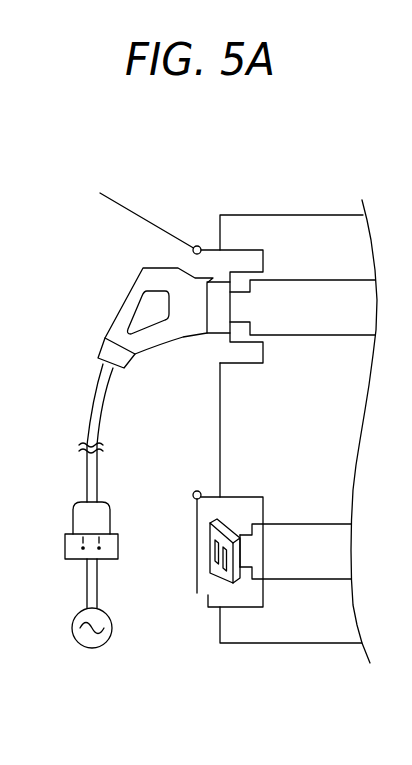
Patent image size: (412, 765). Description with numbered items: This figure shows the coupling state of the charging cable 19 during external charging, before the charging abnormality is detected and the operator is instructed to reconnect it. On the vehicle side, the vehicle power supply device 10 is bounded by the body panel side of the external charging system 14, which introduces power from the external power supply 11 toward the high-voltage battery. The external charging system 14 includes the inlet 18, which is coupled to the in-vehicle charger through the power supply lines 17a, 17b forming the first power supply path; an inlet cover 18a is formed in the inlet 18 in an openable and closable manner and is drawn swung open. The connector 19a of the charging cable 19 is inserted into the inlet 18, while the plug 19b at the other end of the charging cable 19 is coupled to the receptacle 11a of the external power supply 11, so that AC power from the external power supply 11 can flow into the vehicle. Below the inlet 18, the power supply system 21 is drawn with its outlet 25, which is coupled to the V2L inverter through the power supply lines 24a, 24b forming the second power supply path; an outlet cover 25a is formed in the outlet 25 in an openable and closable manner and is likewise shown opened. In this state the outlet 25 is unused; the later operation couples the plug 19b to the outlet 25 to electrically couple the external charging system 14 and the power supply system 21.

The vehicle power supply device 10 is at (305, 192).
The external power supply 11 is at (93, 650).
The receptacle 11a is at (72, 562).
The external charging system 14 is at (360, 266).
The power supply line 17a is at (316, 279).
The power supply line 17b is at (310, 337).
The inlet 18 is at (212, 344).
The inlet cover 18a is at (123, 206).
The charging cable 19 is at (86, 328).
The connector 19a is at (137, 274).
The plug 19b is at (83, 512).
The power supply system 21 is at (340, 510).
The power supply line 24a is at (292, 523).
The power supply line 24b is at (297, 581).
The outlet 25 is at (203, 598).
The outlet cover 25a is at (196, 520).